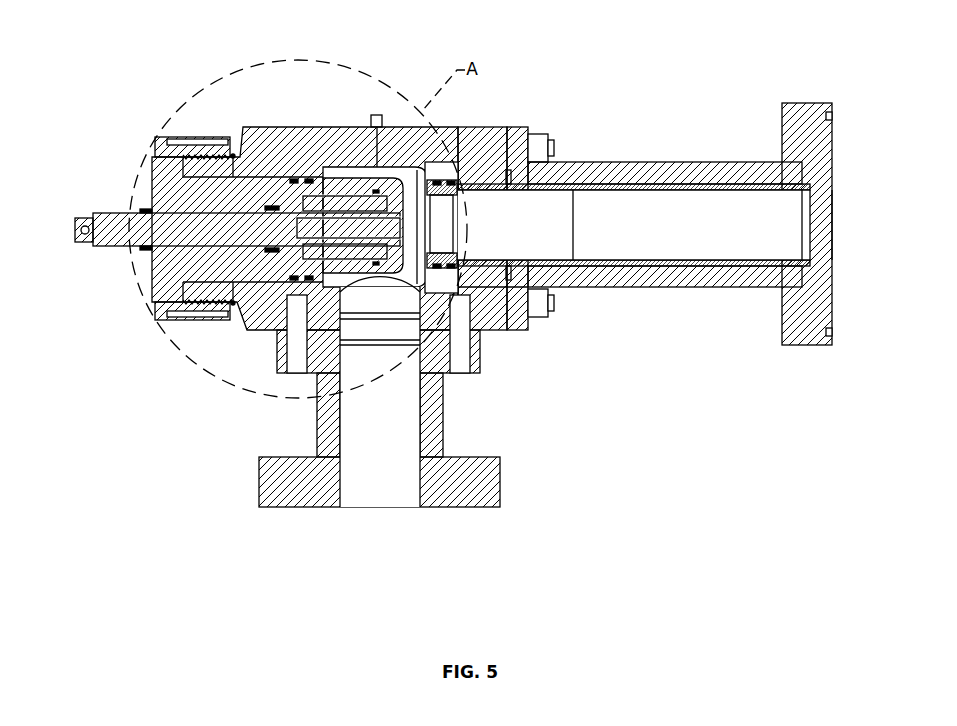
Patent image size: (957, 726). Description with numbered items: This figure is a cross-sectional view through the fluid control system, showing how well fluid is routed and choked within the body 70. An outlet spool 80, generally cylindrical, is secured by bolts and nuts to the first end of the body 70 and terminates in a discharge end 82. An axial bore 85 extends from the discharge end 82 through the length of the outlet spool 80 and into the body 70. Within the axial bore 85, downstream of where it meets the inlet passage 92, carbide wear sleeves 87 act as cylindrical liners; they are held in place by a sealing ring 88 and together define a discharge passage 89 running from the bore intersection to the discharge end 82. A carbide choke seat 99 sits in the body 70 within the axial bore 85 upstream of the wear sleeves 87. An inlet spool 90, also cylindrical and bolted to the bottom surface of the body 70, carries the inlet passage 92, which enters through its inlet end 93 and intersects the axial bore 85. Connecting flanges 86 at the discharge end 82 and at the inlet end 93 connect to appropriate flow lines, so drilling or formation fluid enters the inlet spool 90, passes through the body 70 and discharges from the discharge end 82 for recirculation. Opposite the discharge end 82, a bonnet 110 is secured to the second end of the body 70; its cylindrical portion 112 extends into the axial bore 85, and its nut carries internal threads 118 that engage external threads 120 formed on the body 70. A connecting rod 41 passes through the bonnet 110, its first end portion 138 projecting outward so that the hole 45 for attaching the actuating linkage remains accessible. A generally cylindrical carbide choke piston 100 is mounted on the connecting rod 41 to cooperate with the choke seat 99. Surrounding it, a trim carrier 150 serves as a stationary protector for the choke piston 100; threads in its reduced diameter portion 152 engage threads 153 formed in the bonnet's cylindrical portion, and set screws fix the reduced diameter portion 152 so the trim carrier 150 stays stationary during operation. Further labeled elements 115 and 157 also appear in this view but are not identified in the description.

The connecting rod 41 is at (126, 212).
The hole 45 is at (75, 229).
The body 70 is at (463, 125).
The outlet spool 80 is at (638, 162).
The discharge end 82 is at (833, 197).
The axial bore 85 is at (640, 233).
The connecting flanges 86 is at (800, 103).
The wear sleeves 87 is at (565, 186).
The sealing ring 88 is at (515, 270).
The discharge passage 89 is at (780, 232).
The inlet spool 90 is at (317, 420).
The inlet passage 92 is at (380, 465).
The inlet end 93 is at (410, 505).
The choke seat 99 is at (460, 185).
The choke piston 100 is at (358, 200).
The bonnet 110 is at (153, 185).
The cylindrical portion 112 is at (244, 158).
The lower bolted flange 115 is at (240, 322).
The internal threads 118 is at (200, 155).
The external threads 120 is at (212, 155).
The first end portion 138 is at (133, 246).
The trim carrier 150 is at (385, 178).
The reduced diameter portion 152 is at (260, 195).
The threads 153 is at (236, 302).
The inner shaft sleeve 157 is at (287, 182).